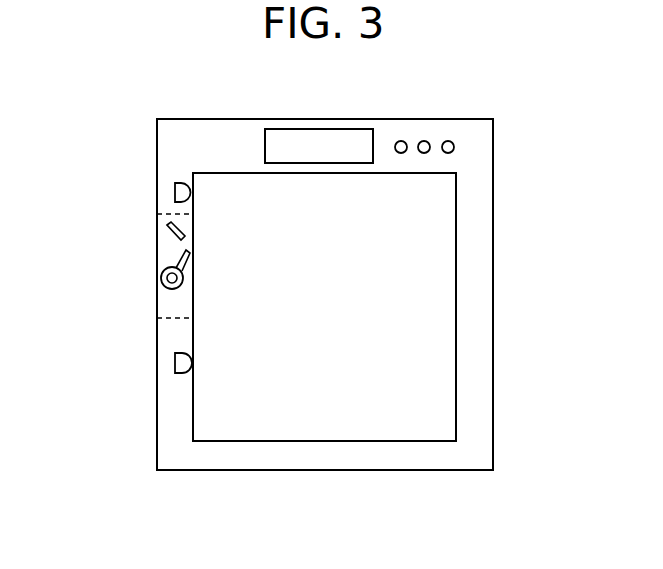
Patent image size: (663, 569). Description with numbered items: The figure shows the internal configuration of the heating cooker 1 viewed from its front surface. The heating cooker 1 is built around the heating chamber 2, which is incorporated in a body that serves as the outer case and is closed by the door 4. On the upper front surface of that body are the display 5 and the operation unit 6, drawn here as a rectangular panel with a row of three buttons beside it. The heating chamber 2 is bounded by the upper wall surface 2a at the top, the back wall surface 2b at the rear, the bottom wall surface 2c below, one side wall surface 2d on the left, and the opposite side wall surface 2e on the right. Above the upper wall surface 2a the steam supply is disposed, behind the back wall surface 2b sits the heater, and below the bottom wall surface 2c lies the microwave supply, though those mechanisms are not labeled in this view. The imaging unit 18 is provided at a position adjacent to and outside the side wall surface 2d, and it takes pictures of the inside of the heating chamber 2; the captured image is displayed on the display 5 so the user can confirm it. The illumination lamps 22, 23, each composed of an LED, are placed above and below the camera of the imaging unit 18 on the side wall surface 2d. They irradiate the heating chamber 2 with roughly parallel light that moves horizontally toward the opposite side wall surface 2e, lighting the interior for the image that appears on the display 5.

The heating cooker 1 is at (553, 101).
The heating chamber 2 is at (423, 363).
The upper wall surface 2a is at (427, 174).
The back wall surface 2b is at (437, 249).
The bottom wall surface 2c is at (330, 441).
The side wall surface 2d is at (193, 402).
The side wall surface 2e is at (456, 400).
The door 4 is at (468, 302).
The display 5 is at (268, 128).
The operation unit 6 is at (425, 141).
The imaging unit 18 is at (163, 279).
The illumination lamp 22 is at (175, 192).
The illumination lamp 23 is at (175, 368).